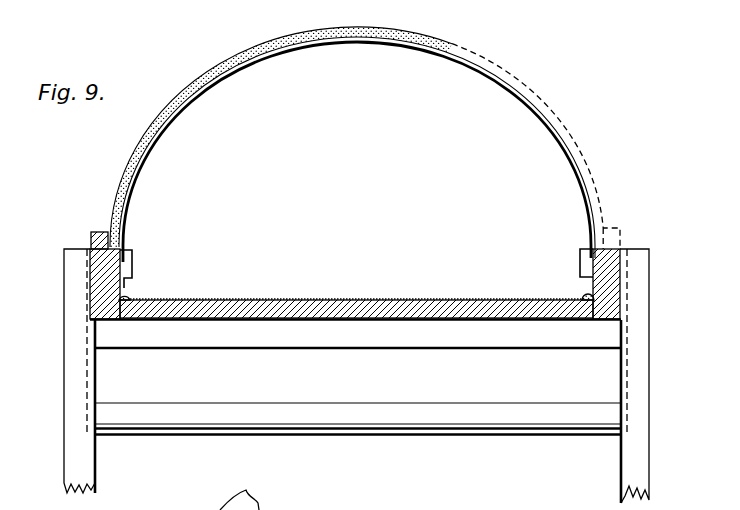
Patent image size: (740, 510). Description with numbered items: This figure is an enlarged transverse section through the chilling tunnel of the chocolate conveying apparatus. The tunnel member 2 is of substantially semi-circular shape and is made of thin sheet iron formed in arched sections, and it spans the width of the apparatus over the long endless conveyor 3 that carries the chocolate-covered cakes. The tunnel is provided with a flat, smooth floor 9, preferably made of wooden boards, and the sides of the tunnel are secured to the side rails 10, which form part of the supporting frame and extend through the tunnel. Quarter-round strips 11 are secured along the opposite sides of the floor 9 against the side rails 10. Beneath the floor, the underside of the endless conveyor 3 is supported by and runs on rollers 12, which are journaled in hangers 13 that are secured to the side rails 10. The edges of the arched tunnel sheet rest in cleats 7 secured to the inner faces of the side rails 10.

The tunnel member 2 is at (236, 58).
The endless conveyor 3 is at (371, 300).
The flange 7 is at (133, 258).
The floor 9 is at (323, 319).
The side rails 10 is at (103, 288).
The quarter-round strips 11 is at (128, 292).
The rollers 12 is at (335, 407).
The hangers 13 is at (95, 377).